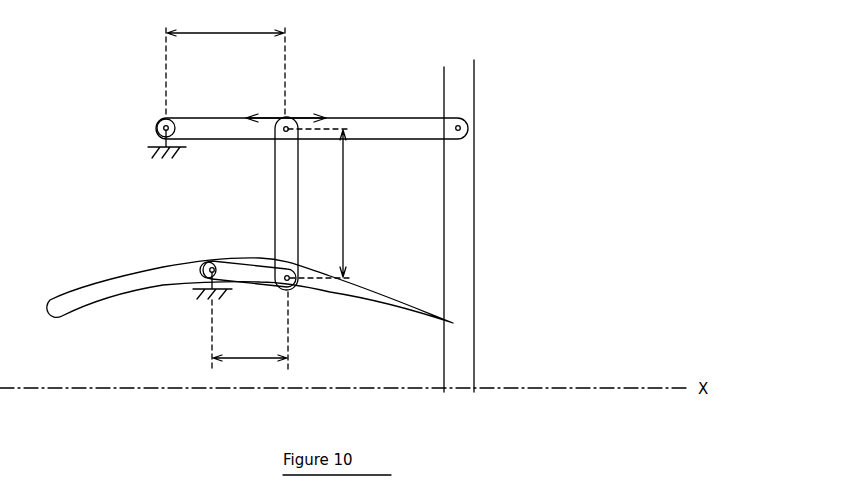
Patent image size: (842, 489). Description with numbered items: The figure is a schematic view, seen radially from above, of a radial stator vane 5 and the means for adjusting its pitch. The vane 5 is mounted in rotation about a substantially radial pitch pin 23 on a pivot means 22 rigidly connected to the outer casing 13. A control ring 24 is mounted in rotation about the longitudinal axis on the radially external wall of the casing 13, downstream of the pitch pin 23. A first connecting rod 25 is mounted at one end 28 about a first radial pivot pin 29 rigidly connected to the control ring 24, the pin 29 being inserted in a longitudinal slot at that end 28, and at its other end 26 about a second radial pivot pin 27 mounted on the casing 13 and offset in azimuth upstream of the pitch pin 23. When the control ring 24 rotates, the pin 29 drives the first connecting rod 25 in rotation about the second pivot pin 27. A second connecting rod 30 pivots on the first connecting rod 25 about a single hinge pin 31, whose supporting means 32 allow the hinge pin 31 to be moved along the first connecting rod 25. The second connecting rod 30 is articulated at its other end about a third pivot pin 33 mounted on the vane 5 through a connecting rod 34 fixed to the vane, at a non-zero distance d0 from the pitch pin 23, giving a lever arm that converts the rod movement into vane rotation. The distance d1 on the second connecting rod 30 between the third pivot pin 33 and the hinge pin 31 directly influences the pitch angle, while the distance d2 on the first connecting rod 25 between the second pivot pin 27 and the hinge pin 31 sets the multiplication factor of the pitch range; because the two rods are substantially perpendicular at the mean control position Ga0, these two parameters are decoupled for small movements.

The radial stator vane 5 is at (118, 296).
The outer casing 13 is at (163, 157).
The pivot means 22 is at (223, 272).
The pitch pin 23 is at (204, 264).
The control ring 24 is at (466, 252).
The first connecting rod 25 is at (392, 122).
The other end of the first connecting rod 26 is at (158, 116).
The second pivot pin 27 is at (160, 131).
The end of the first connecting rod 28 is at (448, 118).
The first pivot pin 29 is at (462, 128).
The second connecting rod 30 is at (275, 208).
The hinge pin 31 is at (283, 132).
The means supporting the hinge pin 32 is at (312, 117).
The third pivot pin 33 is at (291, 292).
The connecting rod 34 is at (270, 291).
The distance between third pivot pin and pitch pin d0 is at (252, 360).
The distance on the second connecting rod d1 is at (343, 222).
The distance on the first connecting rod d2 is at (243, 32).
The mean control position Ga0 is at (494, 152).